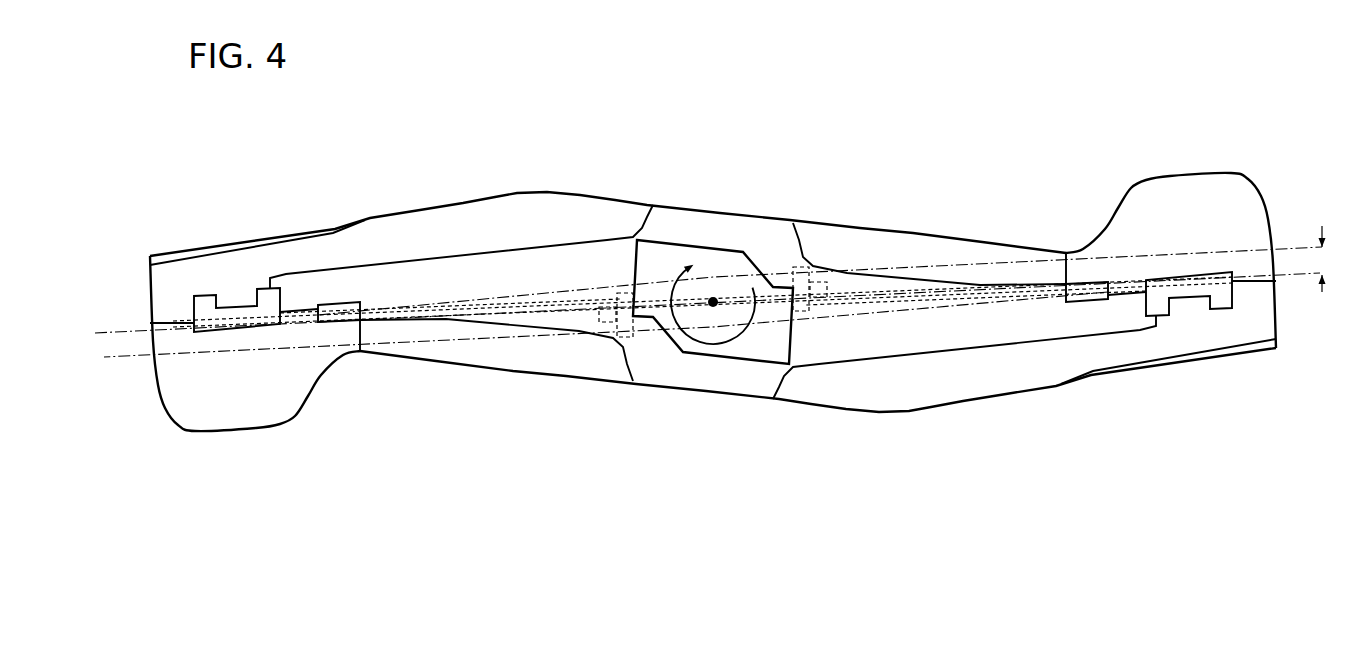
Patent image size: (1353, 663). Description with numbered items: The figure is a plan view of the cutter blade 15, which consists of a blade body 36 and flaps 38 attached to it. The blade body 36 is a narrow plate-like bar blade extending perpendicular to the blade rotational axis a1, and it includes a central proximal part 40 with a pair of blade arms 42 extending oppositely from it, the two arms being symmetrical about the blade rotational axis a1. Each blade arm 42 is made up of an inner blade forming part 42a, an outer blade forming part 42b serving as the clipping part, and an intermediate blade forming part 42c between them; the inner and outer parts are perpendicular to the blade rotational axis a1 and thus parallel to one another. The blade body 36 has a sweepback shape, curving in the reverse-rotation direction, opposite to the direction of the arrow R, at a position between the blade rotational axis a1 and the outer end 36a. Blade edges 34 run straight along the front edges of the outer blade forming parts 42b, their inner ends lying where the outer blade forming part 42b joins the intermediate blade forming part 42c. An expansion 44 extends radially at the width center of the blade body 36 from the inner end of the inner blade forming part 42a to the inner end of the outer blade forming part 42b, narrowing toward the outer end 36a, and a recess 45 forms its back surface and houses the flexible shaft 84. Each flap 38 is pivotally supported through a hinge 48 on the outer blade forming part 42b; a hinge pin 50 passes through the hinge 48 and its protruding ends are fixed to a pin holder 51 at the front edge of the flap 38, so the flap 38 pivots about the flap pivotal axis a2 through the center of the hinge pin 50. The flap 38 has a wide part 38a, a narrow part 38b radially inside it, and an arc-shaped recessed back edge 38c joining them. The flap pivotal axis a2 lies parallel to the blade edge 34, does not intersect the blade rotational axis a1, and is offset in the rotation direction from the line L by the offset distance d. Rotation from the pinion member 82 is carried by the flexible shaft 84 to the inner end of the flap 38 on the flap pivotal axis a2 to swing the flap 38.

The cutter blade 15 is at (537, 81).
The blade edge 34 is at (204, 245).
The blade body 36 is at (842, 225).
The outer end of the blade body 36a is at (148, 295).
The flap 38 is at (254, 432).
The wide part 38a is at (196, 412).
The narrow part 38b is at (345, 342).
The back edge 38c is at (327, 365).
The central proximal part 40 is at (703, 223).
The blade arm 42 is at (460, 222).
The inner blade forming part 42a is at (862, 397).
The outer blade forming part 42b is at (1173, 337).
The intermediate blade forming part 42c is at (983, 378).
The expansion 44 is at (520, 270).
The recess 45 is at (405, 277).
The hinge 48 is at (238, 313).
The hinge pin 50 is at (294, 316).
The pin holder 51 is at (168, 320).
The pinion member 82 is at (795, 265).
The flexible shaft 84 is at (560, 307).
The blade rotational axis a1 is at (713, 306).
The flap pivotal axis a2 is at (1318, 330).
The line L is at (1141, 265).
The offset distance d is at (1330, 265).
The arrow R is at (713, 295).